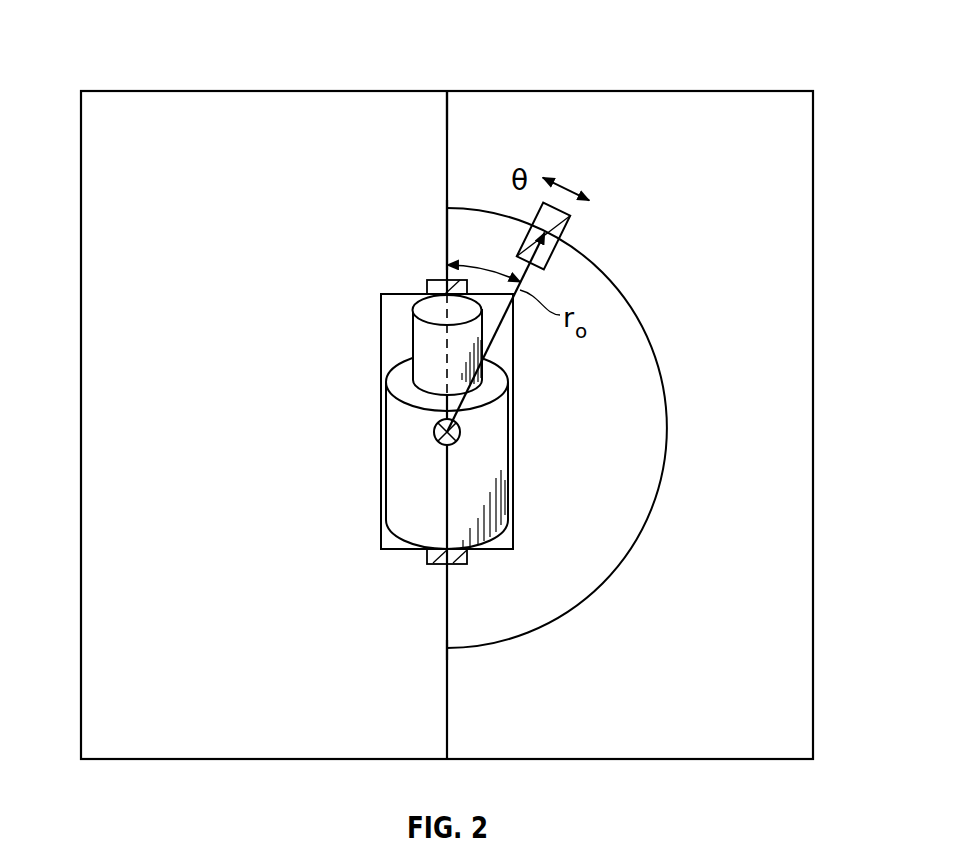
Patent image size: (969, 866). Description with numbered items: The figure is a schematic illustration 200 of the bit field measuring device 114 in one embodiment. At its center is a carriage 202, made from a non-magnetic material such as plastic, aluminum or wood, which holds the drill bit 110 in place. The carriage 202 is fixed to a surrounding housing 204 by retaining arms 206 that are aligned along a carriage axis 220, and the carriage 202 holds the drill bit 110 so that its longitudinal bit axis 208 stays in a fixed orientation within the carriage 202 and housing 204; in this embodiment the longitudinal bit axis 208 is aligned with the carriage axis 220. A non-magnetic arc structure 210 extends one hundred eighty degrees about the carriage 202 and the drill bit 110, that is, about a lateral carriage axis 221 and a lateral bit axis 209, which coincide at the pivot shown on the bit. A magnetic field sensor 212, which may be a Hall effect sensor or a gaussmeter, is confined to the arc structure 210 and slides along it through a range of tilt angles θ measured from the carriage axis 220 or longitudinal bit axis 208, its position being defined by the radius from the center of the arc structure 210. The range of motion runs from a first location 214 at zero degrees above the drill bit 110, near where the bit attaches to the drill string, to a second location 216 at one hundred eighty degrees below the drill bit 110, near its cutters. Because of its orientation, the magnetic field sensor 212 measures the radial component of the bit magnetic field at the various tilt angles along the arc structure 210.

The schematic illustration 200 is at (137, 57).
The housing 204 is at (765, 91).
The retaining arms 206 is at (447, 165).
The carriage axis 220 is at (447, 102).
The first location 214 is at (447, 208).
The magnetic field sensor 212 is at (562, 206).
The arc structure 210 is at (620, 288).
The longitudinal bit axis 208 is at (413, 348).
The carriage 202 is at (383, 425).
The lateral carriage axis 221 is at (344, 453).
The lateral bit axis 209 is at (430, 433).
The drill bit 110 is at (400, 490).
The second location 216 is at (447, 647).
The bit field measuring device 114 is at (825, 433).